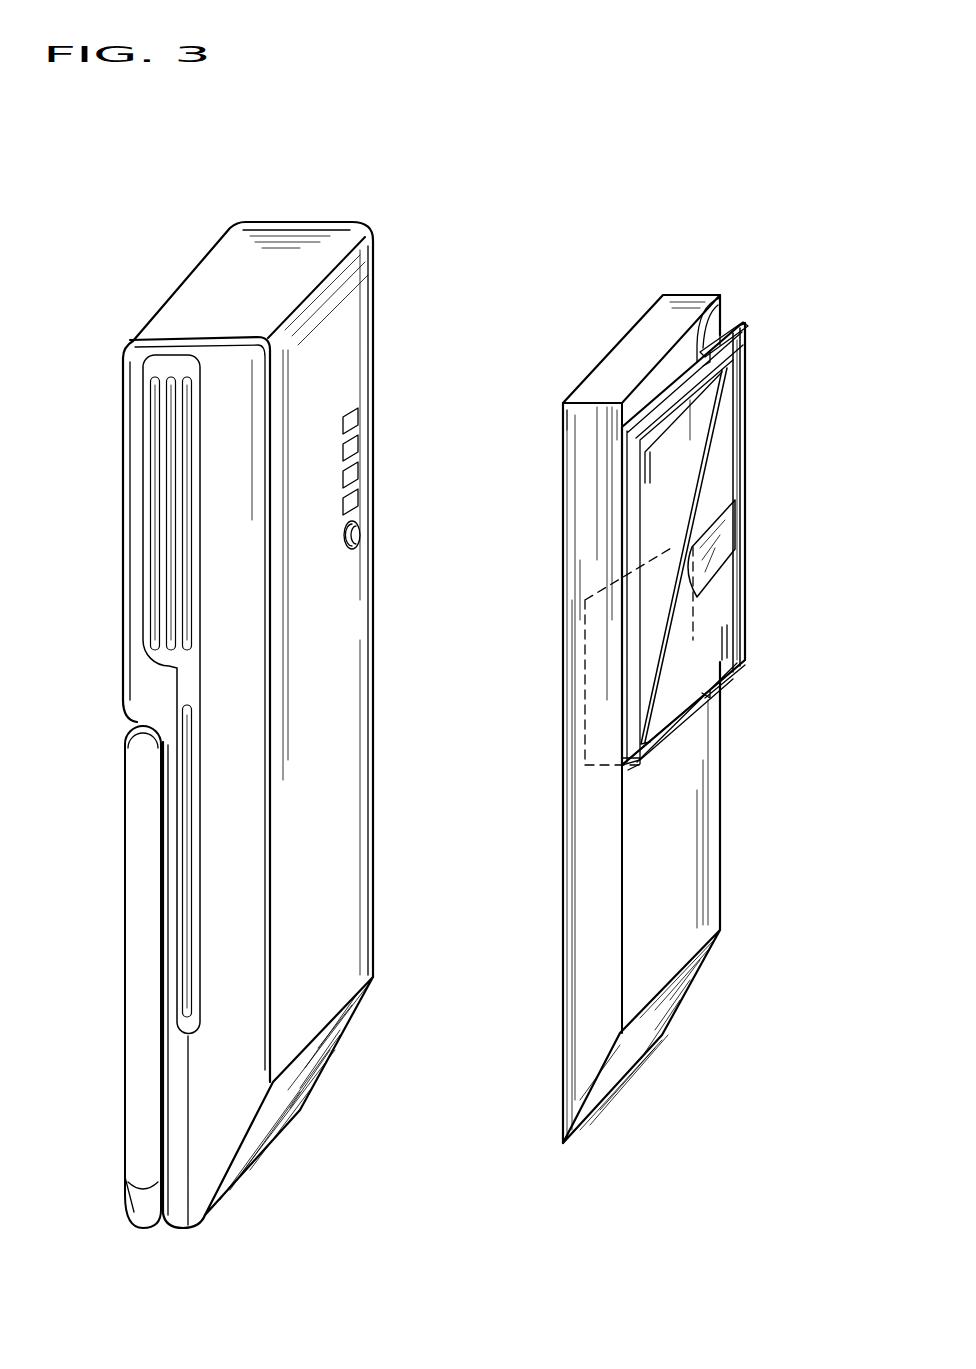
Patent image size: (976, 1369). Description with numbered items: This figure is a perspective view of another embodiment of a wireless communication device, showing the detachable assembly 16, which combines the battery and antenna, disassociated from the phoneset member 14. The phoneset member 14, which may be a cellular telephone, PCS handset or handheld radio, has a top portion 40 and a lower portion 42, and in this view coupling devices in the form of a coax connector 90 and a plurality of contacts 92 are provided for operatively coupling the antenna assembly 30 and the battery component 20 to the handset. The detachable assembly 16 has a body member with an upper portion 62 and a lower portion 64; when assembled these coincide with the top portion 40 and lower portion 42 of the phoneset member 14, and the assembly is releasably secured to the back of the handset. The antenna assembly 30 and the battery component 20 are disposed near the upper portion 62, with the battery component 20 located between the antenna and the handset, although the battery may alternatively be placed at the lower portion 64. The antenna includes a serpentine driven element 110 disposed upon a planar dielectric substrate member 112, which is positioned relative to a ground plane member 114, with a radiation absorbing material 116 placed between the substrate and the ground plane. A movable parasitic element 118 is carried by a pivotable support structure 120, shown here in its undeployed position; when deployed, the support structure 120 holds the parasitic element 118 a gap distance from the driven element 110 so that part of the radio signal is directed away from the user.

The phoneset member 14 is at (290, 248).
The detachable assembly 16 is at (676, 310).
The battery component 20 is at (595, 682).
The antenna assembly 30 is at (770, 465).
The top portion 40 is at (360, 347).
The lower portion 42 is at (330, 950).
The upper portion 62 is at (582, 490).
The lower portion 64 is at (680, 890).
The coax connector 90 is at (358, 534).
The contacts 92 is at (355, 421).
The driven element 110 is at (712, 672).
The planar dielectric substrate member 112 is at (745, 330).
The ground plane member 114 is at (713, 305).
The radiation absorbing material 116 is at (730, 327).
The parasitic element 118 is at (738, 590).
The support structure 120 is at (733, 538).